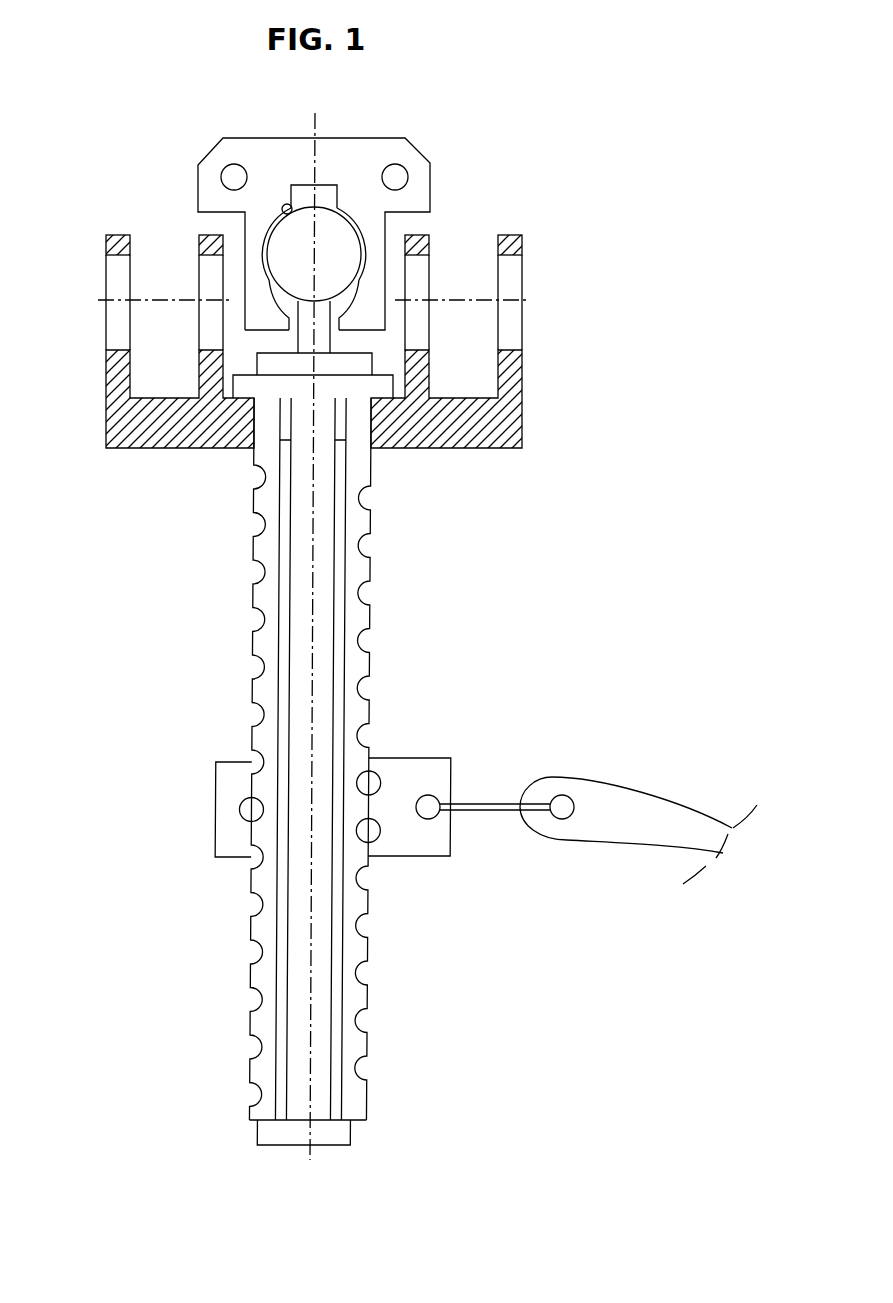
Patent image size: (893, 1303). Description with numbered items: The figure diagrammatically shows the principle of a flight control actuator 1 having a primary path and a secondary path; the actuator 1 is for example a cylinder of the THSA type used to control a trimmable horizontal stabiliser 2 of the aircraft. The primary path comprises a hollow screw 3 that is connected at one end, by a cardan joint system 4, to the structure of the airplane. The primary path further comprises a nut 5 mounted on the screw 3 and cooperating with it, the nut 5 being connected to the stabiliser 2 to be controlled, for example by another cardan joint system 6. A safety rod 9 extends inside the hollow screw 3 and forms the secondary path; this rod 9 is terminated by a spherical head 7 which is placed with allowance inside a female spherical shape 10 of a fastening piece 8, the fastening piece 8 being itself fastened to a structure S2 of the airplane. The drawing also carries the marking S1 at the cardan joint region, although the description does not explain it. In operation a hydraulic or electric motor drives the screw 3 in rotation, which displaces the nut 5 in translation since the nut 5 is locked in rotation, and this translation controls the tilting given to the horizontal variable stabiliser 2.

The flight control actuator 1 is at (215, 811).
The trimmable horizontal stabiliser 2 is at (562, 776).
The hollow screw 3 is at (360, 638).
The cardan joint system 4 is at (106, 418).
The nut 5 is at (409, 758).
The cardan joint system 6 is at (488, 803).
The spherical head 7 is at (282, 256).
The fastening piece 8 is at (385, 138).
The safety rod 9 is at (301, 639).
The female spherical shape 10 is at (284, 205).
The sensor S1 is at (165, 297).
The structure S2 is at (408, 173).